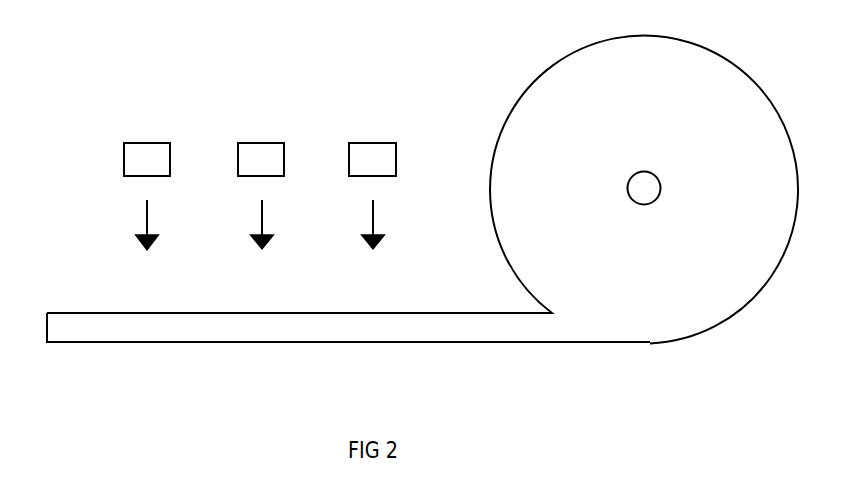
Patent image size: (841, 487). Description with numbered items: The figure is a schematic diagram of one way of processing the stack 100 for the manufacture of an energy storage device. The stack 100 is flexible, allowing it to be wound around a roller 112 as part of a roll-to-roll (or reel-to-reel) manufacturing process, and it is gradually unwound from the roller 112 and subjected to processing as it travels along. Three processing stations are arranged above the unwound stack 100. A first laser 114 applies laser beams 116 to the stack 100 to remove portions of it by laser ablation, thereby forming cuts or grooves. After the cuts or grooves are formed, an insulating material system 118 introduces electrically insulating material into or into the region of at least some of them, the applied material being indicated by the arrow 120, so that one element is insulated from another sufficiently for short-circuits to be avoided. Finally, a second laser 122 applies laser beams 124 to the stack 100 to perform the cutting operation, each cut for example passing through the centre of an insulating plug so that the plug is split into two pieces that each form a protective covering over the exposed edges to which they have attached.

The stack 100 is at (473, 368).
The roller 112 is at (652, 174).
The first laser 114 is at (377, 143).
The laser beams 116 is at (373, 216).
The insulating material system 118 is at (260, 143).
The second treatment application arrow 120 is at (262, 216).
The second laser 122 is at (147, 143).
The laser beams 124 is at (147, 215).